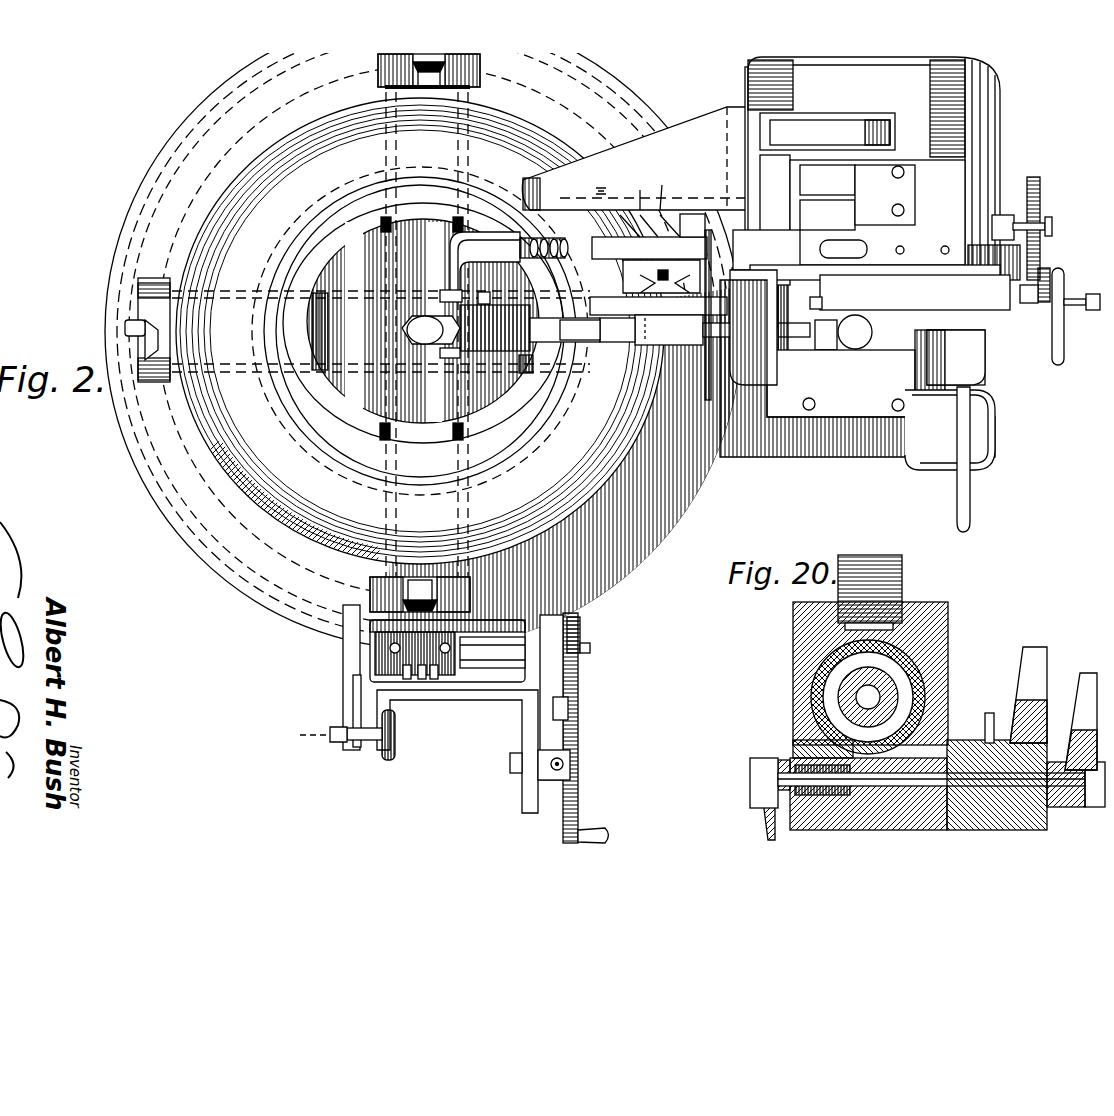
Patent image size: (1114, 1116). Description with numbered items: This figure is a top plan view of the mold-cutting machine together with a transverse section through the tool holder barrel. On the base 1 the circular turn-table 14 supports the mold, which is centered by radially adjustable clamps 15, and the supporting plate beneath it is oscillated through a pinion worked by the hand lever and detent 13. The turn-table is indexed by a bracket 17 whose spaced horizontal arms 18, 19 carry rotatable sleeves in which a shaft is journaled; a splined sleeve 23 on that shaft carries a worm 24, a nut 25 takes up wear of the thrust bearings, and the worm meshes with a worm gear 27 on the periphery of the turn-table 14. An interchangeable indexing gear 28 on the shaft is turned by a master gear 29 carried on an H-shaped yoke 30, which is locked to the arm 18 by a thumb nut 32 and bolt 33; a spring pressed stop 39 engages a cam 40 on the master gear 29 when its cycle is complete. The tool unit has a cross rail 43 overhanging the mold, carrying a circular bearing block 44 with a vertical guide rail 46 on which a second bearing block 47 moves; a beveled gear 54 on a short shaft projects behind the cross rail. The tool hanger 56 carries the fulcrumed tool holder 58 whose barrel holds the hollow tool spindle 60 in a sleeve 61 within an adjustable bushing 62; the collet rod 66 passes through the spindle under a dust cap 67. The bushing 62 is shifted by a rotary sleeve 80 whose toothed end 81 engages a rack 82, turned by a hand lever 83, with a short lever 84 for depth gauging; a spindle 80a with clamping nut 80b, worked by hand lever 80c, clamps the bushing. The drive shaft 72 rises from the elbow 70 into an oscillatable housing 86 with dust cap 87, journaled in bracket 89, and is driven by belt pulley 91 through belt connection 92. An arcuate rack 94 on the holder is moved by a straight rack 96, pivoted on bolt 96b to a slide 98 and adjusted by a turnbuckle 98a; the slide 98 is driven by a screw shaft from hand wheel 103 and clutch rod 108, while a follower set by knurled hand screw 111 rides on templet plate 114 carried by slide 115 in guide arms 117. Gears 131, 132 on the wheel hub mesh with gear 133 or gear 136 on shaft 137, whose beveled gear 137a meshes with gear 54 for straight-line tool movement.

In FIG. 2, the base 1 is at (843, 457).
In FIG. 2, the hand lever and detent 13 is at (970, 490).
In FIG. 2, the turn-table 14 is at (110, 270).
In FIG. 2, the radially adjustable clamps 15 is at (378, 66).
In FIG. 2, the bracket 17 is at (343, 655).
In FIG. 2, the arm 18 is at (343, 682).
In FIG. 2, the arm 19 is at (578, 678).
In FIG. 2, the sleeve 23 is at (470, 668).
In FIG. 2, the worm 24 is at (422, 680).
In FIG. 2, the nut 25 is at (447, 652).
In FIG. 2, the worm gear 27 is at (130, 245).
In FIG. 2, the indexing gear 28 is at (580, 628).
In FIG. 2, the master gear 29 is at (580, 744).
In FIG. 2, the H-shaped yoke 30 is at (522, 736).
In FIG. 2, the thumb nut 32 is at (395, 748).
In FIG. 2, the bolt 33 is at (314, 739).
In FIG. 2, the spring pressed stop 39 is at (578, 772).
In FIG. 2, the cam 40 is at (568, 708).
In FIG. 2, the cross rail 43 is at (880, 287).
In FIG. 2, the circular bearing block 44 is at (649, 236).
In FIG. 2, the vertical guide rail 46 is at (640, 293).
In FIG. 2, the second bearing block 47 is at (658, 305).
In FIG. 2, the beveled gear 54 is at (645, 191).
In FIG. 2, the tool hanger 56 is at (685, 330).
In FIG. 2, the tool holder 58 is at (495, 345).
In FIG. 20, the tool holder 58 is at (948, 620).
In FIG. 20, the hollow tool spindle 60 is at (840, 697).
In FIG. 20, the sleeve 61 is at (830, 685).
In FIG. 20, the bushing 62 is at (815, 665).
In FIG. 20, the adjustable rod 66 is at (860, 708).
In FIG. 2, the dust cap 67 is at (420, 345).
In FIG. 2, the elbow 70 is at (455, 256).
In FIG. 2, the drive shaft 72 is at (540, 262).
In FIG. 20, the rotary sleeve 80 is at (898, 800).
In FIG. 20, the spindle 80a is at (1012, 800).
In FIG. 20, the clamping nut 80b is at (793, 750).
In FIG. 20, the hand lever 80c is at (1090, 676).
In FIG. 20, the toothed end 81 is at (843, 822).
In FIG. 20, the rack 82 is at (793, 732).
In FIG. 20, the hand lever 83 is at (1040, 650).
In FIG. 20, the short lever 84 is at (989, 716).
In FIG. 2, the oscillatable housing 86 is at (775, 240).
In FIG. 2, the dust cap 87 is at (868, 250).
In FIG. 2, the bracket 89 is at (745, 158).
In FIG. 2, the belt pulley 91 is at (800, 112).
In FIG. 2, the belt connection 92 is at (864, 122).
In FIG. 20, the arcuate rack 94 is at (902, 572).
In FIG. 2, the straight rack 96 is at (755, 355).
In FIG. 2, the bolt 96b is at (822, 300).
In FIG. 2, the slide 98 is at (956, 357).
In FIG. 2, the turnbuckle 98a is at (746, 315).
In FIG. 2, the hand wheel 103 is at (1062, 355).
In FIG. 2, the clutch operating rod 108 is at (1052, 300).
In FIG. 2, the knurled hand screw 111 is at (866, 326).
In FIG. 2, the templet plate 114 is at (905, 372).
In FIG. 2, the slide 115 is at (945, 405).
In FIG. 2, the guide arms 117 is at (775, 378).
In FIG. 2, the gear 131 is at (1080, 316).
In FIG. 2, the gear 132 is at (1052, 275).
In FIG. 2, the gear 133 is at (1010, 248).
In FIG. 2, the gear 136 is at (1040, 183).
In FIG. 2, the shaft 137 is at (700, 210).
In FIG. 2, the beveled gear 137a is at (676, 184).